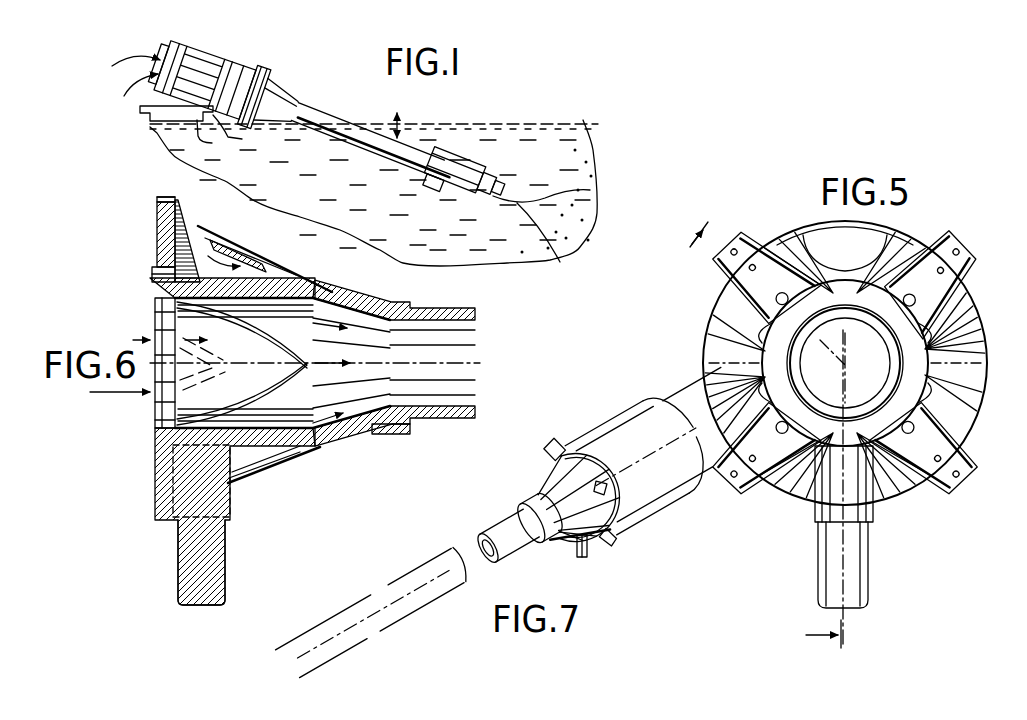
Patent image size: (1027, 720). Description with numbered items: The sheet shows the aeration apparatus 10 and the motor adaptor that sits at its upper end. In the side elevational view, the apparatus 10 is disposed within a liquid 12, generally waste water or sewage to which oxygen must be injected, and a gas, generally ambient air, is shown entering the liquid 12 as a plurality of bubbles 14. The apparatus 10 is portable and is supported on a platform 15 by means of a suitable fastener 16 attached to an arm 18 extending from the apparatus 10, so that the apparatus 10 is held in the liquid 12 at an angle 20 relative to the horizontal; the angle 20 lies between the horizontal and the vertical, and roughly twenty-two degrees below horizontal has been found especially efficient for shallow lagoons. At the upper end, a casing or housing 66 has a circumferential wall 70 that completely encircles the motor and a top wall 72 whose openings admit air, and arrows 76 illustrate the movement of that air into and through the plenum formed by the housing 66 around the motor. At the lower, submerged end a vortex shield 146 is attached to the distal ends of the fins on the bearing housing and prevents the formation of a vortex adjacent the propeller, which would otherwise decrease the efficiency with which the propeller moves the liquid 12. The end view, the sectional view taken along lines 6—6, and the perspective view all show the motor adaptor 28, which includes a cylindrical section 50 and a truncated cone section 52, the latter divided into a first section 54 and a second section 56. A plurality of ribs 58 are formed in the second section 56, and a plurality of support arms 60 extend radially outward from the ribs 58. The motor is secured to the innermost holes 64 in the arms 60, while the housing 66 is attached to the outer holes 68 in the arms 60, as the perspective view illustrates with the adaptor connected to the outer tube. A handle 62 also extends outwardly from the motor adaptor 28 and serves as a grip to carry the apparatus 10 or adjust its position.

In FIG. 5, the section line 6— 6 is at (754, 435).
In FIG. 1, the apparatus 10 is at (297, 91).
In FIG. 1, the liquid 12 is at (534, 122).
In FIG. 1, the bubbles 14 is at (586, 158).
In FIG. 1, the platform 15 is at (142, 110).
In FIG. 1, the fastener 16 is at (236, 139).
In FIG. 1, the arm 18 is at (200, 140).
In FIG. 1, the angle 20 is at (400, 119).
In FIG. 6, the motor adaptor 28 is at (391, 302).
In FIG. 6, the cylindrical section 50 is at (446, 420).
In FIG. 5, the cylindrical section 50 is at (826, 414).
In FIG. 7, the cylindrical section 50 is at (486, 536).
In FIG. 6, the truncated cone section 52 is at (314, 447).
In FIG. 7, the truncated cone section 52 is at (534, 498).
In FIG. 6, the first section 54 is at (372, 434).
In FIG. 5, the first section 54 is at (872, 310).
In FIG. 7, the first section 54 is at (512, 512).
In FIG. 6, the second section 56 is at (200, 236).
In FIG. 5, the second section 56 is at (792, 240).
In FIG. 7, the second section 56 is at (588, 472).
In FIG. 6, the ribs 58 is at (300, 286).
In FIG. 7, the ribs 58 is at (542, 549).
In FIG. 6, the support arms 60 is at (160, 246).
In FIG. 5, the support arms 60 is at (752, 242).
In FIG. 7, the support arms 60 is at (556, 452).
In FIG. 6, the handle 62 is at (226, 556).
In FIG. 5, the handle 62 is at (818, 546).
In FIG. 7, the handle 62 is at (588, 555).
In FIG. 6, the innermost holes 64 is at (153, 274).
In FIG. 5, the innermost holes 64 is at (786, 290).
In FIG. 1, the casing or housing 66 is at (254, 64).
In FIG. 7, the casing or housing 66 is at (649, 417).
In FIG. 6, the outer holes 68 is at (164, 203).
In FIG. 5, the outer holes 68 is at (736, 258).
In FIG. 1, the circumferential wall 70 is at (200, 47).
In FIG. 7, the circumferential wall 70 is at (676, 434).
In FIG. 1, the top wall 72 is at (156, 84).
In FIG. 1, the arrows 76 is at (160, 46).
In FIG. 1, the vortex shield 146 is at (461, 163).